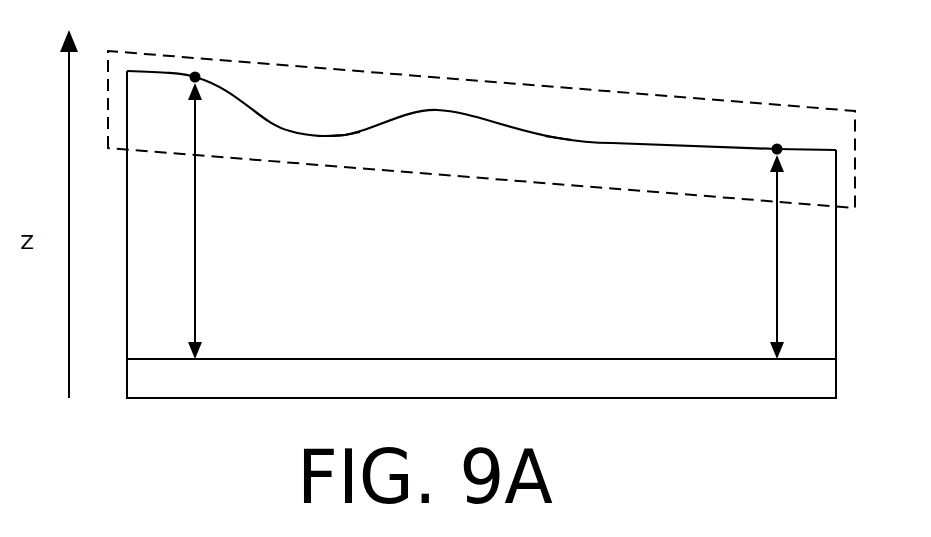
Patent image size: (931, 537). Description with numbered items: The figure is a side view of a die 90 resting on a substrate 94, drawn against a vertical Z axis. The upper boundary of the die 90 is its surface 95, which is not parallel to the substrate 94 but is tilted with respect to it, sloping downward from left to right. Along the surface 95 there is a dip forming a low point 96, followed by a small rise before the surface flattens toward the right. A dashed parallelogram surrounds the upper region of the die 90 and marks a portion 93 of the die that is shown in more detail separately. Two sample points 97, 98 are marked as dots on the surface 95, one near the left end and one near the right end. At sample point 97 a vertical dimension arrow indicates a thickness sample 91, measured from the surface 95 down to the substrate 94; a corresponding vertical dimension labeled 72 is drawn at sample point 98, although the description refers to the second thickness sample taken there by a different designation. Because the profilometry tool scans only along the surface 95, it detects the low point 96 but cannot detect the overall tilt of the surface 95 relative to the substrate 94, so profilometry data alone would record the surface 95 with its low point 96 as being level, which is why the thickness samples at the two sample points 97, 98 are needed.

The die 90 is at (481, 234).
The substrate 94 is at (661, 358).
The portion of the die 93 is at (676, 98).
The sample point 97 is at (195, 72).
The sample point 98 is at (777, 144).
The low point 96 is at (345, 135).
The surface 95 is at (558, 138).
The thickness sample 91 is at (195, 263).
The second height 72 is at (777, 265).